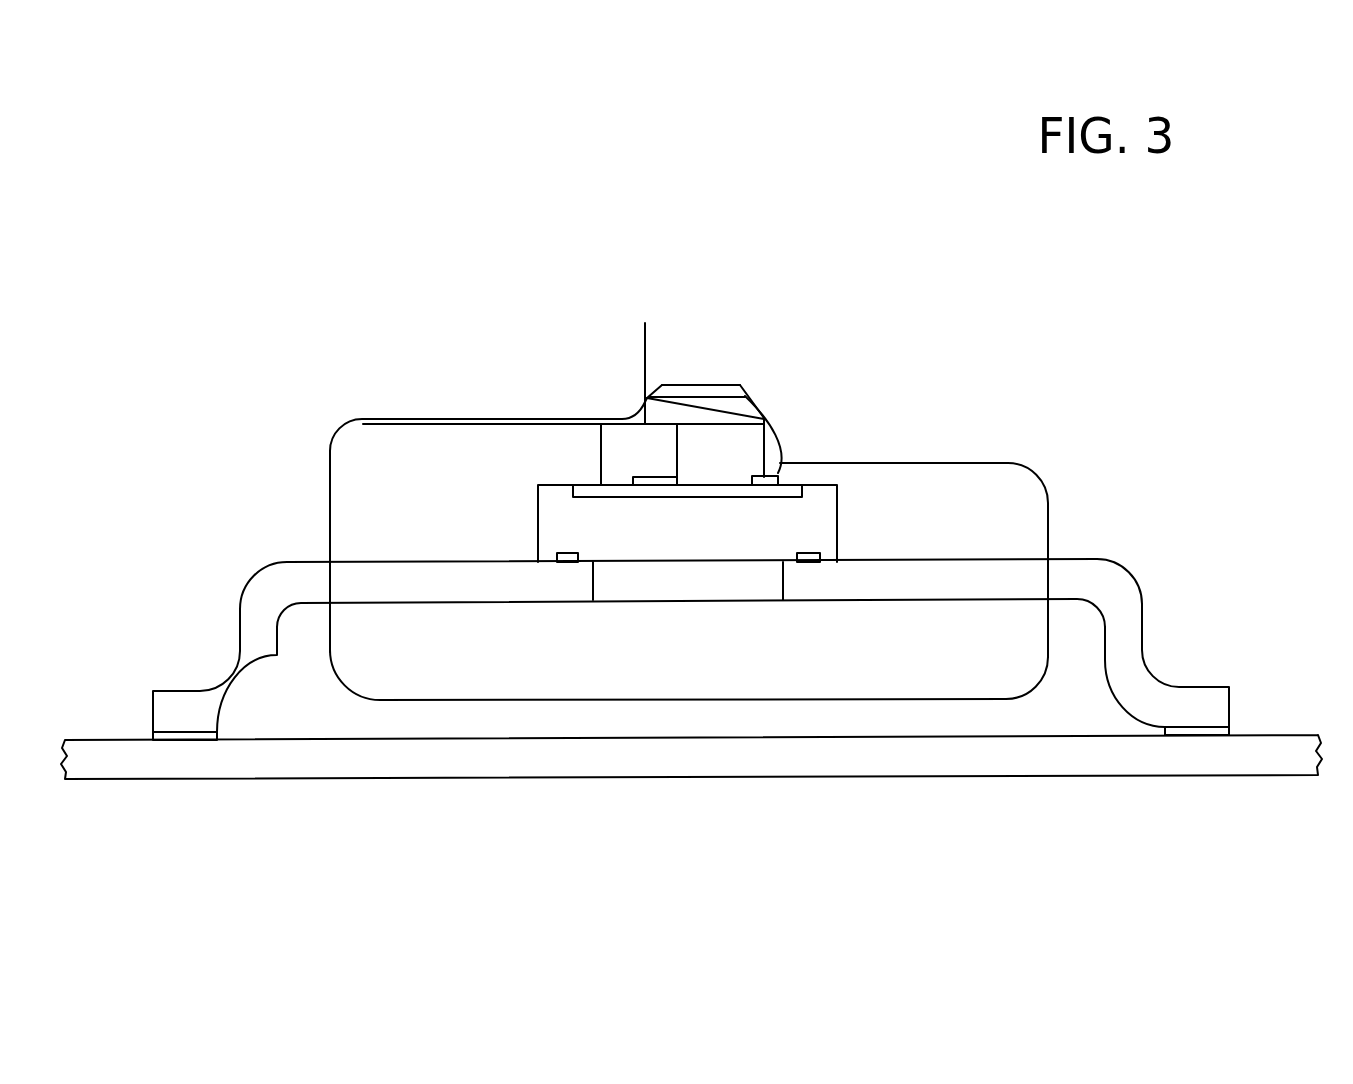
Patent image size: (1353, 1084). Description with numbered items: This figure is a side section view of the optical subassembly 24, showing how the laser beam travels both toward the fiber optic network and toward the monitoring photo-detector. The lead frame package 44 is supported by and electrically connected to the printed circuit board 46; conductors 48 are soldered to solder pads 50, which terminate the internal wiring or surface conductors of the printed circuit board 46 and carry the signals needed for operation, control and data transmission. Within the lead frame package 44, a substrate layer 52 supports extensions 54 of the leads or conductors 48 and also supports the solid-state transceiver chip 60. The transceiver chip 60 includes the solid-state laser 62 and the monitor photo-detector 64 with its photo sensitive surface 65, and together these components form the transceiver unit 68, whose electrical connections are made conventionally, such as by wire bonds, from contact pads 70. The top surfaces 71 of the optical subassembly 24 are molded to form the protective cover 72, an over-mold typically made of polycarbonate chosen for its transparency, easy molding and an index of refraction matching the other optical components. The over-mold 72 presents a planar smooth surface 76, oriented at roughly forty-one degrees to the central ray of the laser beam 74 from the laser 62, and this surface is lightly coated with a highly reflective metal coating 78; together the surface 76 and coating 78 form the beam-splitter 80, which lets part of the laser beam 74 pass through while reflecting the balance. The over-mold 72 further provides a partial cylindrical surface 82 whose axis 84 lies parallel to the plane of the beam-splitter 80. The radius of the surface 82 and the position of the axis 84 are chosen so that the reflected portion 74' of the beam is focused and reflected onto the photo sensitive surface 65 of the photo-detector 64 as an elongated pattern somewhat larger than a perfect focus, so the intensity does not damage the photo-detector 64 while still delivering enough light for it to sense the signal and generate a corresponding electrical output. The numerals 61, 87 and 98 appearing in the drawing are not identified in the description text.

The optical subassembly 24 is at (674, 537).
The lead frame package 44 is at (681, 589).
The printed circuit board 46 is at (763, 758).
The conductors 48 is at (1195, 695).
The solder pads 50 is at (1243, 827).
The substrate layer 52 is at (1025, 803).
The extensions 54 is at (998, 575).
The solid-state transceiver chip 60 is at (679, 648).
The washer pad 61 is at (653, 478).
The solid-state laser 62 is at (637, 445).
The monitor photo-detector 64 is at (780, 465).
The photo sensitive surface 65 is at (777, 473).
The transceiver unit 68 is at (845, 508).
The contact pads 70 is at (928, 832).
The top surfaces 71 is at (478, 448).
The protective cover 72 is at (862, 475).
The laser beam 74 is at (618, 343).
The reflected portion of laser beam 74' is at (705, 354).
The planar smooth surface 76 is at (647, 398).
The reflective metal coating 78 is at (701, 305).
The beam-splitter 80 is at (642, 392).
The partial cylindrical surface 82 is at (750, 402).
The axis 84 is at (550, 512).
The recess 87 is at (587, 490).
The left mounting foot 98 is at (195, 708).